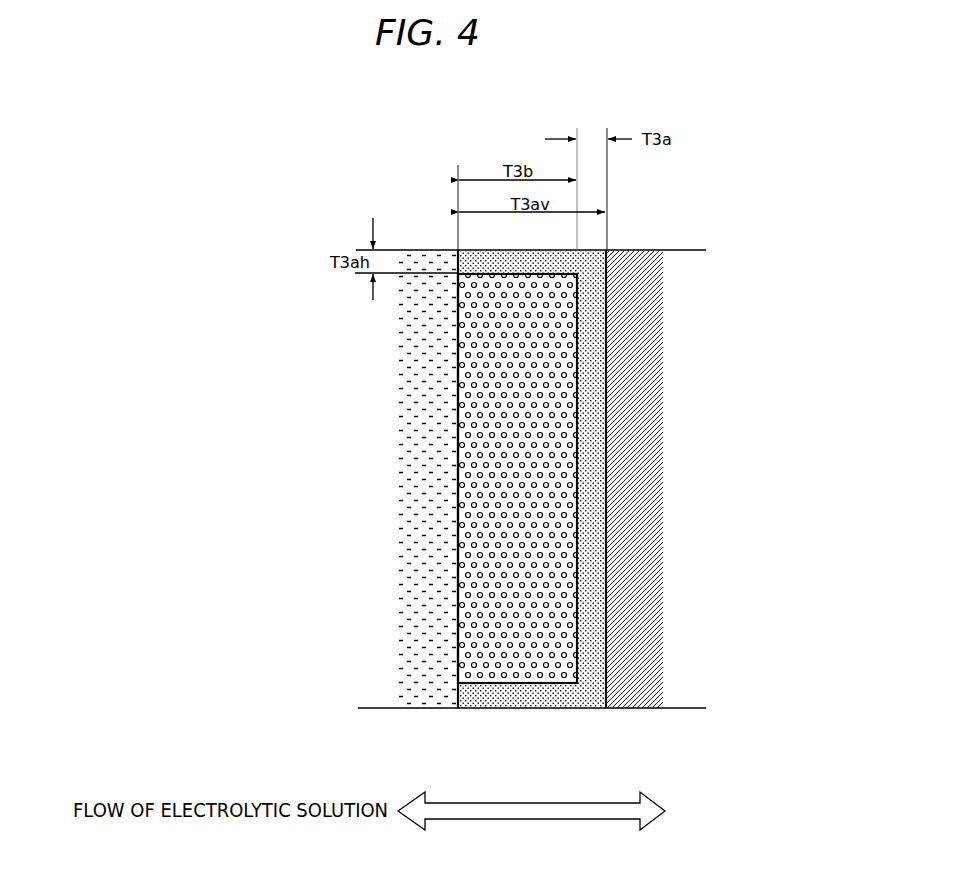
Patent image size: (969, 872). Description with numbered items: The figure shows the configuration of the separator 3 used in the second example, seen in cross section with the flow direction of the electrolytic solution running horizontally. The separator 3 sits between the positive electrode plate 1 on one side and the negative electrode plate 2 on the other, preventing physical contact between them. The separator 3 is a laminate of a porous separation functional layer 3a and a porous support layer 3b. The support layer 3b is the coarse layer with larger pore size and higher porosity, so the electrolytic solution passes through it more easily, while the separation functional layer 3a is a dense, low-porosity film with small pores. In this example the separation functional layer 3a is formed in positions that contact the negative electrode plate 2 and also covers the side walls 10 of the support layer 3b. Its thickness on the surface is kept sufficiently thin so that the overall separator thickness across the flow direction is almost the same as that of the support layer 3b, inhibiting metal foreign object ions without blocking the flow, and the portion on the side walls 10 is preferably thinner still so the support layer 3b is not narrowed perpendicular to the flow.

The positive electrode plate 1 is at (432, 515).
The negative electrode plate 2 is at (635, 515).
The separator 3 is at (747, 298).
The separation functional layer 3a is at (604, 347).
The support layer 3b is at (558, 408).
The side walls 10 is at (552, 273).